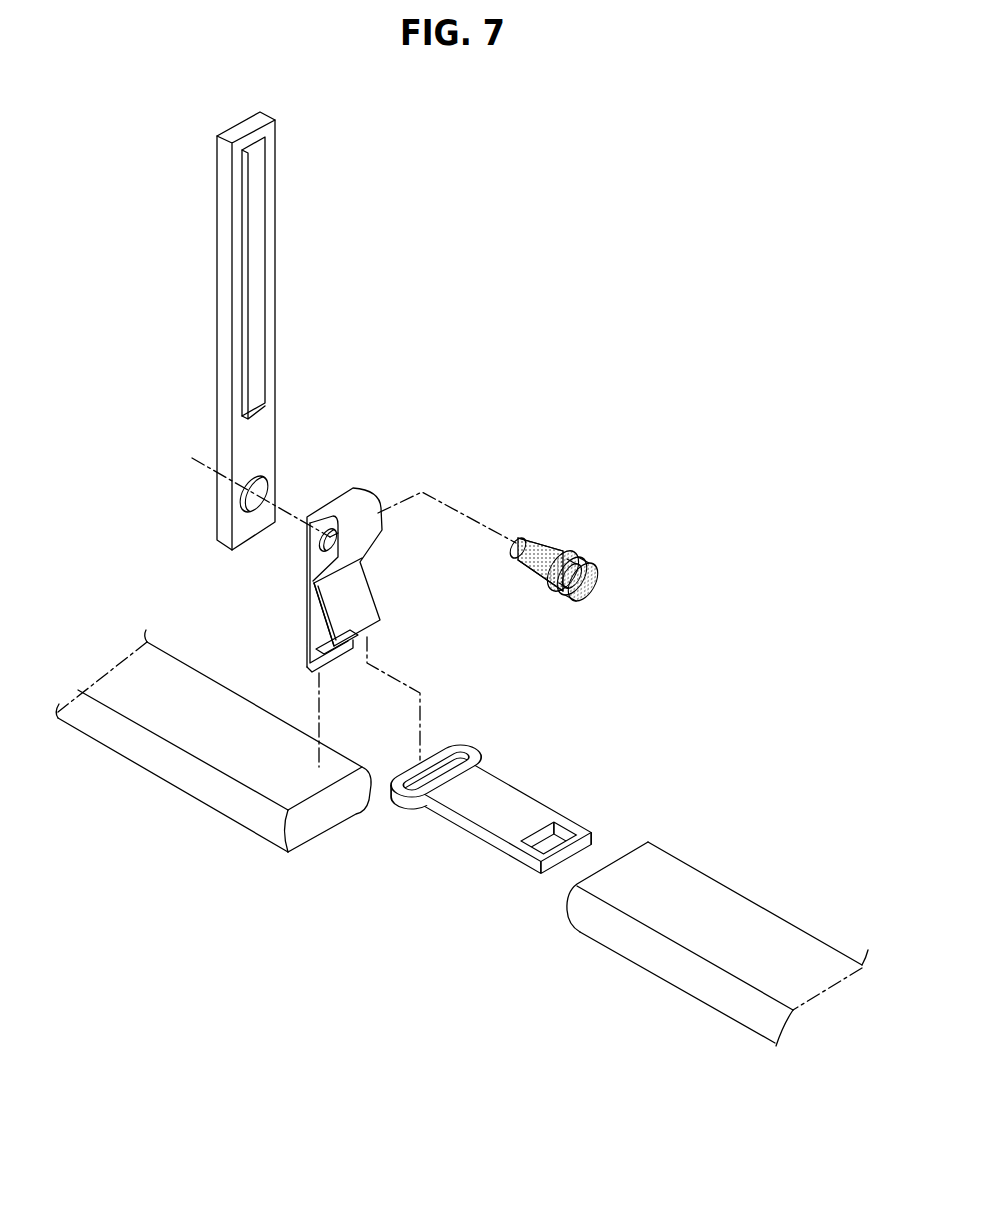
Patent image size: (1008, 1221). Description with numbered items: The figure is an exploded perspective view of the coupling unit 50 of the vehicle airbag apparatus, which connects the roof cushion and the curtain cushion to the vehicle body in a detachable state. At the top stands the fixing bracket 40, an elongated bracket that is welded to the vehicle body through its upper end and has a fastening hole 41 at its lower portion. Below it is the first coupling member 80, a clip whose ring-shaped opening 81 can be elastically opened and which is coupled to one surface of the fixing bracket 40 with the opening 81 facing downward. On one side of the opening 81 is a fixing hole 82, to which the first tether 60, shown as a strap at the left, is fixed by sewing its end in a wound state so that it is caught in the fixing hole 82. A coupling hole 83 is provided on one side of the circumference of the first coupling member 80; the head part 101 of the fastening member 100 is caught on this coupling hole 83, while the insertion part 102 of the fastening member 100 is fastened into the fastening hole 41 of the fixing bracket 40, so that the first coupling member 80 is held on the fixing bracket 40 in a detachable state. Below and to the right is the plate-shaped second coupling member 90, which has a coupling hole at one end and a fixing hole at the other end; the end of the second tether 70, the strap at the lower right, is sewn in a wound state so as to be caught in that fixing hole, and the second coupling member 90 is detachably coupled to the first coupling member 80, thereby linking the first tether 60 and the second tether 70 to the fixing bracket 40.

The fixing bracket 40 is at (286, 220).
The fastening hole 41 is at (262, 487).
The coupling unit 50 is at (607, 710).
The first tether 60 is at (187, 778).
The second tether 70 is at (675, 965).
The first coupling member 80 is at (290, 605).
The ring-shaped opening 81 is at (313, 624).
The fixing hole 82 is at (327, 642).
The coupling hole 83 is at (330, 542).
The second coupling member 90 is at (494, 831).
The fastening member 100 is at (584, 576).
The head part 101 is at (593, 575).
The insertion part 102 is at (535, 545).